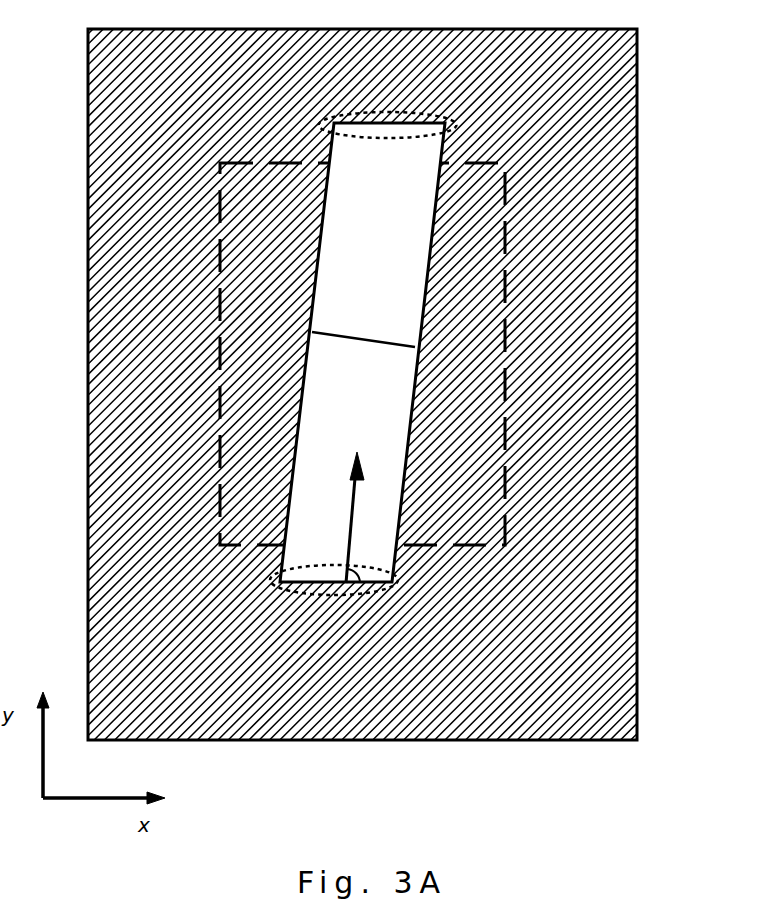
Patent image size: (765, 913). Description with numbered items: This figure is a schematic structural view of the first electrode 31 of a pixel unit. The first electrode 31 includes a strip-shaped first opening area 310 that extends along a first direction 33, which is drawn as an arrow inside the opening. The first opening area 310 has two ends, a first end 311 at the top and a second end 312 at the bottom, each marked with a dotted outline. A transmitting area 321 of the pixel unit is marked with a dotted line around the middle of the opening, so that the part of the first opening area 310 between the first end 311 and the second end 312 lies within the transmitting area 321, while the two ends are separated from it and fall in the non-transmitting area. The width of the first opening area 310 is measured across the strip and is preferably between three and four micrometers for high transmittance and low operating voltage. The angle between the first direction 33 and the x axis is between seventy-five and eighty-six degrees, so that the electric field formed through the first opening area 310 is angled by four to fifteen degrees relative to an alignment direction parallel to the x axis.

The first electrode 31 is at (637, 68).
The first opening area 310 is at (423, 285).
The first end 311 is at (455, 117).
The second end 312 is at (272, 588).
The transmitting area 321 is at (219, 438).
The first direction 33 is at (347, 538).